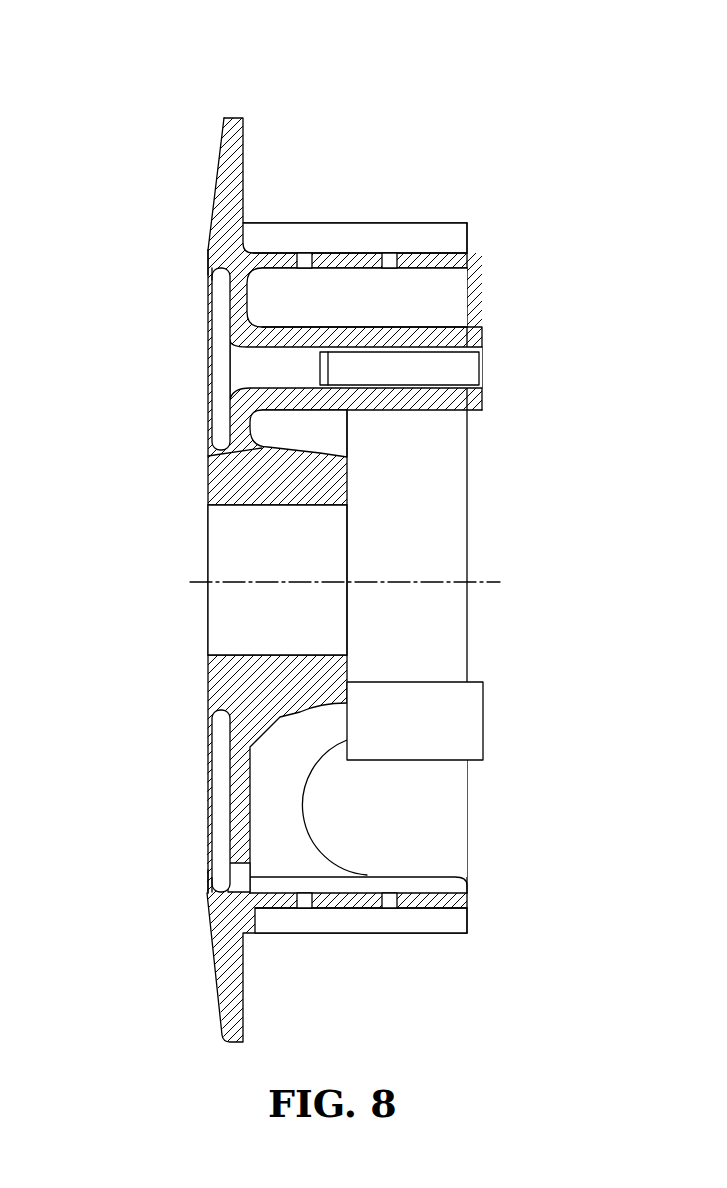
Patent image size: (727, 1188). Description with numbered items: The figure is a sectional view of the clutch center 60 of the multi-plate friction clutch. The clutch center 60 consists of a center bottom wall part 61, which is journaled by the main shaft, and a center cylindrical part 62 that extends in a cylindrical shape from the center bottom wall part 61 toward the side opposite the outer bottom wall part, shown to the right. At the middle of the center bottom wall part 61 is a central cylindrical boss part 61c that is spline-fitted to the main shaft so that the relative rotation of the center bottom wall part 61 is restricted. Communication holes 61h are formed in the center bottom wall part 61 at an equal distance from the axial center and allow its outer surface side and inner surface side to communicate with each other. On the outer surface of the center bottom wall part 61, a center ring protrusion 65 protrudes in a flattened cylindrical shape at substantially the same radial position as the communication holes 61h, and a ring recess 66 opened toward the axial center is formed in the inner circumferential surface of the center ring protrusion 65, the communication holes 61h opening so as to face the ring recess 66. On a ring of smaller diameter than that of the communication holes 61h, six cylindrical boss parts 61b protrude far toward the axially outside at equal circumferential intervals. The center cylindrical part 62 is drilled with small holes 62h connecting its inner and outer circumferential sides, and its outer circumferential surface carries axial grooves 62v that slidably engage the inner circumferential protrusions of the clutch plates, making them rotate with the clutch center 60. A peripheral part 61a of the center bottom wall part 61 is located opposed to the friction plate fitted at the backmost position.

The clutch center 60 is at (275, 88).
The center bottom wall part 61 is at (228, 765).
The peripheral part 61a is at (225, 150).
The cylindrical boss parts 61b is at (400, 328).
The central cylindrical boss part 61c is at (323, 456).
The communication holes 61h is at (242, 874).
The center cylindrical part 62 is at (350, 253).
The small holes 62h is at (306, 252).
The grooves 62v is at (434, 229).
The center ring protrusion 65 is at (208, 263).
The ring recess 66 is at (223, 278).